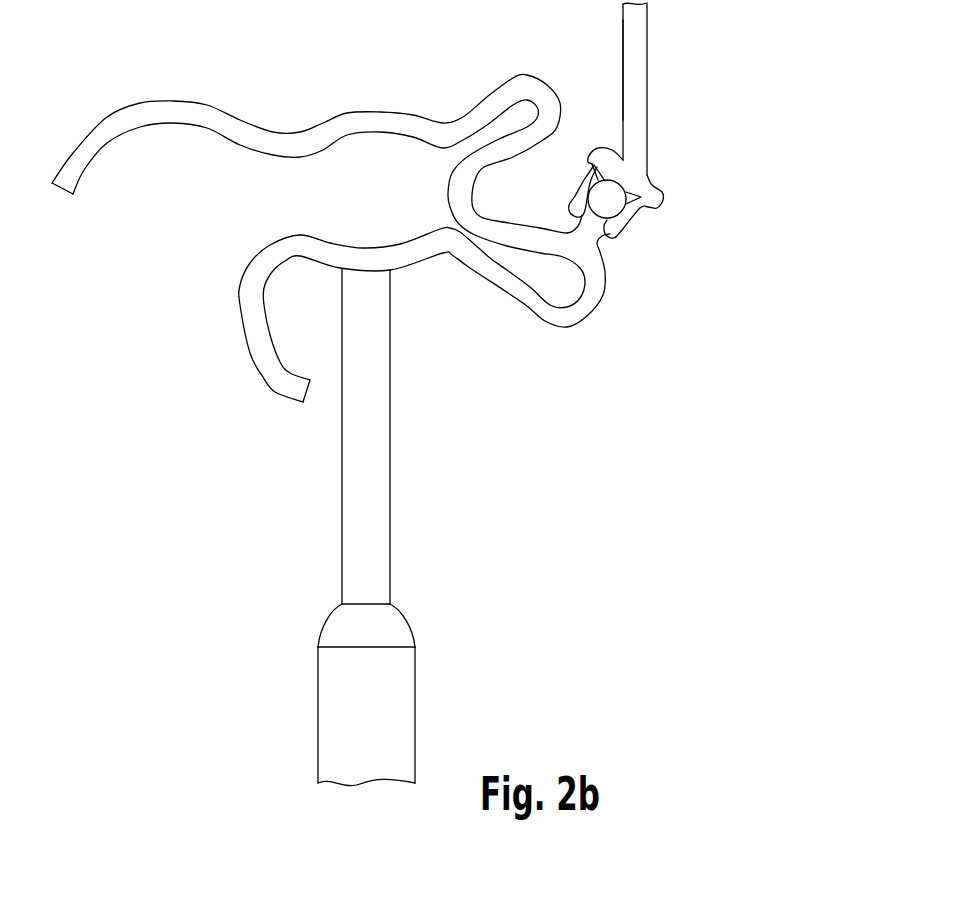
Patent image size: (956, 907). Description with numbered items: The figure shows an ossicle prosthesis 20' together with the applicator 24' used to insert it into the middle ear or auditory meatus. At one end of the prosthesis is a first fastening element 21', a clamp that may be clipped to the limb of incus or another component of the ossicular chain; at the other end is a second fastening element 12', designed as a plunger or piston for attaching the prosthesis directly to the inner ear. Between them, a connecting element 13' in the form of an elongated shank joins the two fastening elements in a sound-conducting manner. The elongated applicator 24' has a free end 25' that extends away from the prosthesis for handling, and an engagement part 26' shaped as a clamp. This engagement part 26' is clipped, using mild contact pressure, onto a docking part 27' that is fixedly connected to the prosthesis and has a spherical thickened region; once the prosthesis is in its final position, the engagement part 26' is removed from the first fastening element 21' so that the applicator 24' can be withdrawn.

The second fastening element 12' is at (408, 695).
The connecting element 13' is at (409, 436).
The ossicle prosthesis 20' is at (444, 202).
The first fastening element 21' is at (331, 238).
The applicator 24' is at (677, 89).
The free end 25' is at (584, 70).
The engagement part 26' is at (653, 217).
The docking part 27' is at (617, 242).